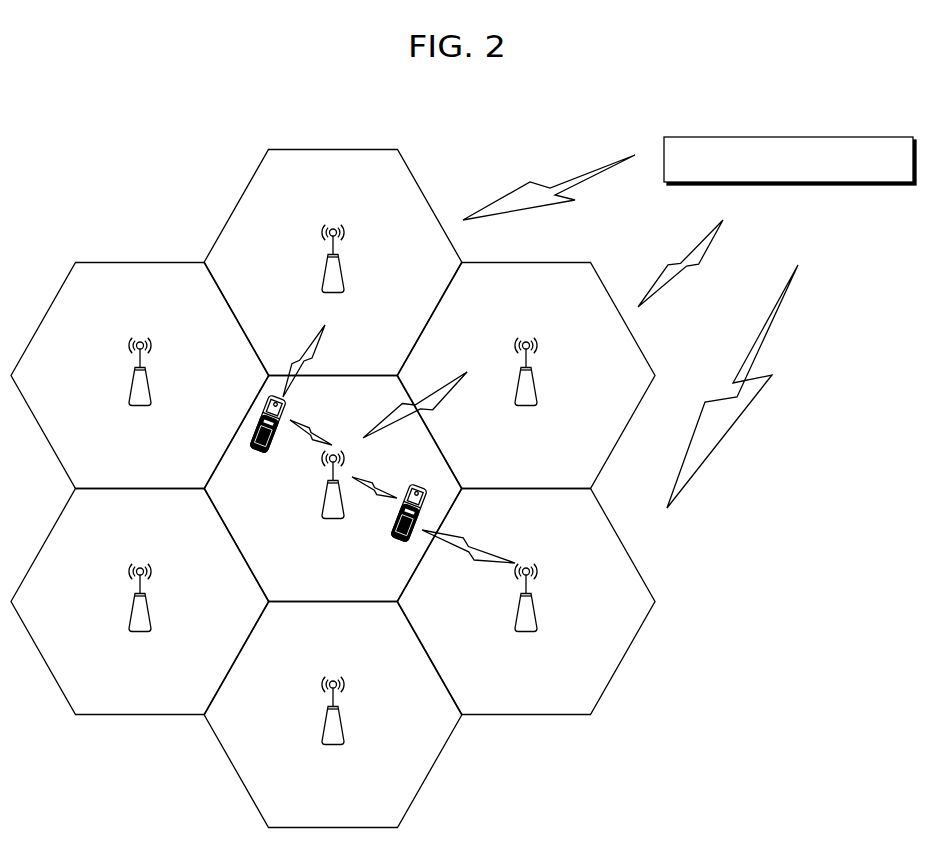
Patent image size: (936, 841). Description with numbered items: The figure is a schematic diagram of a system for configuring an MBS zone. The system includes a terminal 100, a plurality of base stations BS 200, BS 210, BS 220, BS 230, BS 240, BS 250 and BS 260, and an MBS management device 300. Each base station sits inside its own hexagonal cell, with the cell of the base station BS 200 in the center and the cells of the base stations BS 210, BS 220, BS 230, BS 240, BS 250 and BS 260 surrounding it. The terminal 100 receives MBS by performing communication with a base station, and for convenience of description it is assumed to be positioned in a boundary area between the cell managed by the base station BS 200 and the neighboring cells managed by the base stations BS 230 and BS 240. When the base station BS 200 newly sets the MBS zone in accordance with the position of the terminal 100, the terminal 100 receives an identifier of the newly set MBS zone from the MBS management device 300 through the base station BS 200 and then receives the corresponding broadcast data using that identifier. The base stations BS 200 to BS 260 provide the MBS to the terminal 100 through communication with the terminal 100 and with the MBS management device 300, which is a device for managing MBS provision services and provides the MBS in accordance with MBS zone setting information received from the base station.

The MBS management device 300 is at (870, 137).
The terminal 100 is at (393, 535).
The base station BS 200 is at (333, 489).
The base station BS 210 is at (333, 263).
The base station BS 220 is at (526, 376).
The base station BS 230 is at (526, 602).
The base station BS 240 is at (333, 715).
The base station BS 250 is at (140, 602).
The base station BS 260 is at (140, 376).